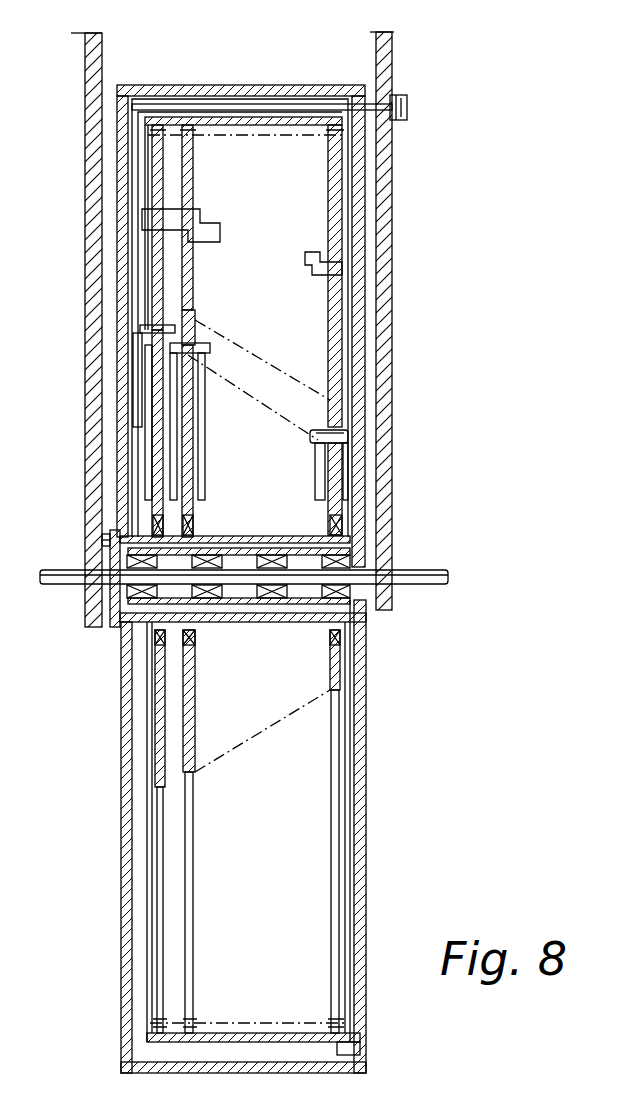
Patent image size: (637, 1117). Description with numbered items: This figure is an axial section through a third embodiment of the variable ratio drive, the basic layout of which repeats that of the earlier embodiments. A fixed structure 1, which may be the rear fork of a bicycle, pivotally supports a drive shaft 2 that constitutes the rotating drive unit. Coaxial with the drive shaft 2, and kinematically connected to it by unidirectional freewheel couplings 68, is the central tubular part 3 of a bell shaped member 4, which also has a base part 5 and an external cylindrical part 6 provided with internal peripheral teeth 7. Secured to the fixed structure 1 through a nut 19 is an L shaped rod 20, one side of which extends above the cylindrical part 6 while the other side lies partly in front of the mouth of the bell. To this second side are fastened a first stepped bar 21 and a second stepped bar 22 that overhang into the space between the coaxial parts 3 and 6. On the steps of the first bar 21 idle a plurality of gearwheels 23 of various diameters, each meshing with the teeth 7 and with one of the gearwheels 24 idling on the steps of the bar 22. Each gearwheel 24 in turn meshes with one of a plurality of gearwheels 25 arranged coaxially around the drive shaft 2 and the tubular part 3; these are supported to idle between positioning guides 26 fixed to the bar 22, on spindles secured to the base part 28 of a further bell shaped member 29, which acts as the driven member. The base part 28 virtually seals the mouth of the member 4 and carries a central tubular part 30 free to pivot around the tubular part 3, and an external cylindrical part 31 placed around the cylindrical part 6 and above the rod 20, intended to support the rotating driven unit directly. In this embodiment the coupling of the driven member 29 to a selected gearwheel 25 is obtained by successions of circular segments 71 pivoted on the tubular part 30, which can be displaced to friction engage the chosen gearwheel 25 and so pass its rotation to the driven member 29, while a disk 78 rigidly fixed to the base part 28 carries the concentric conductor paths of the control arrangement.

The fixed structure 1 is at (96, 288).
The drive shaft 2 is at (422, 588).
The central tubular part 3 is at (243, 606).
The bell shaped member 4 is at (368, 825).
The base part 5 is at (366, 925).
The external cylindrical part 6 is at (363, 1048).
The internal peripheral teeth 7 is at (194, 127).
The nut 19 is at (397, 98).
The L shaped rod 20 is at (138, 163).
The first stepped bar 21 is at (192, 215).
The second stepped bar 22 is at (348, 438).
The gearwheels 23 is at (333, 172).
The gearwheels 24 is at (197, 338).
The gearwheels 25 is at (337, 490).
The positioning guides 26 is at (150, 467).
The base part 28 is at (122, 962).
The bell shaped member 29 is at (120, 825).
The central tubular part 30 is at (284, 536).
The external cylindrical part 31 is at (228, 1062).
The unidirectional freewheel couplings 68 is at (298, 598).
The circular segments 71 is at (198, 527).
The disk 78 is at (112, 627).